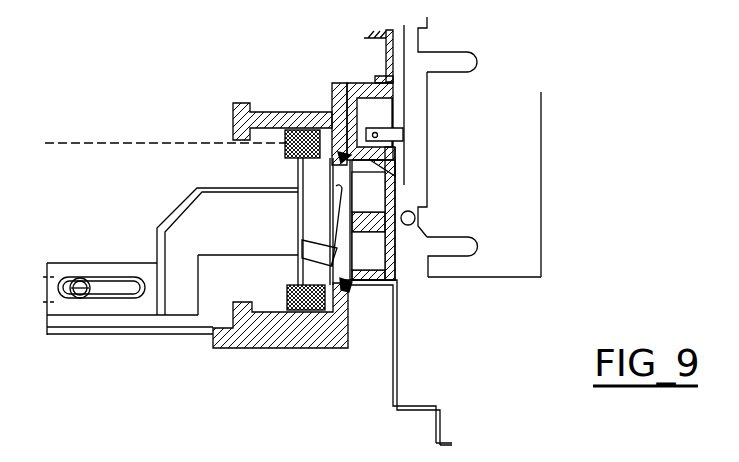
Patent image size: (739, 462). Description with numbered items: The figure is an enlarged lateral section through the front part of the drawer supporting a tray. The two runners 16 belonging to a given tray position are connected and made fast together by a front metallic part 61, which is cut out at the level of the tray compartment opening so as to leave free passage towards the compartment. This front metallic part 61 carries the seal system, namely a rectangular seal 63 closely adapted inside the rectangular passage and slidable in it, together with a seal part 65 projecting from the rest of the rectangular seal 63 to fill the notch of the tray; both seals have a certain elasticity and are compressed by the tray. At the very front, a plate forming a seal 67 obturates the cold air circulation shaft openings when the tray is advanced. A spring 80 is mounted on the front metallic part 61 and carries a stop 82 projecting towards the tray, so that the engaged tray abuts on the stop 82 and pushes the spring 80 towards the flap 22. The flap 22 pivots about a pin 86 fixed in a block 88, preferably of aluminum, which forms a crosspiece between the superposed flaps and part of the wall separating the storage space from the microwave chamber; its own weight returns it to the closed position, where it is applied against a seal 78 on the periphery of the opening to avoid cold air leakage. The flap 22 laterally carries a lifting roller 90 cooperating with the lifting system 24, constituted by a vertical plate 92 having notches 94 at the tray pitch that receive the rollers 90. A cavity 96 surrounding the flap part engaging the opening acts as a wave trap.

The runners 16 is at (62, 264).
The flap 22 is at (398, 210).
The lifting system 24 is at (543, 144).
The front metallic part 61 is at (306, 270).
The rectangular seal 63 is at (322, 112).
The seal part 65 is at (291, 129).
The plate forming seal 67 is at (328, 177).
The seal 78 is at (400, 150).
The spring 80 is at (330, 206).
The stop 82 is at (300, 246).
The pin 86 is at (378, 134).
The block 88 is at (391, 44).
The lifting roller 90 is at (417, 226).
The plate 92 is at (526, 214).
The notches 94 is at (466, 51).
The cavity 96 is at (380, 201).